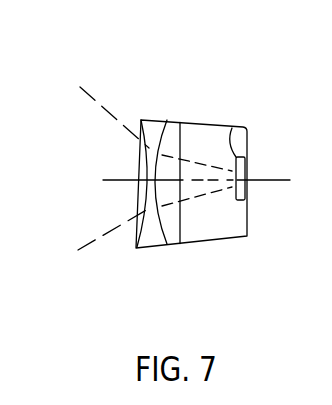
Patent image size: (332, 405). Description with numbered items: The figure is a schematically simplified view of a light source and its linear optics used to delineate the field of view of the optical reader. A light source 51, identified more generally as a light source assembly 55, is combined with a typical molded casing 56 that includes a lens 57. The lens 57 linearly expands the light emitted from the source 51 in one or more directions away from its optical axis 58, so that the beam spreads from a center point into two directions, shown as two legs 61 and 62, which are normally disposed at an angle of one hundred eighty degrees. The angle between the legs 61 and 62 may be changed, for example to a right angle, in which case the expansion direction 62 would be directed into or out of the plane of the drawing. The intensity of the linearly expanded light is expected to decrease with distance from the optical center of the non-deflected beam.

The light source 51 is at (238, 128).
The light source assembly 55 is at (191, 113).
The molded casing 56 is at (233, 126).
The lens 57 is at (159, 118).
The optical axis 58 is at (113, 180).
The leg 61 is at (148, 118).
The leg 62 is at (137, 239).